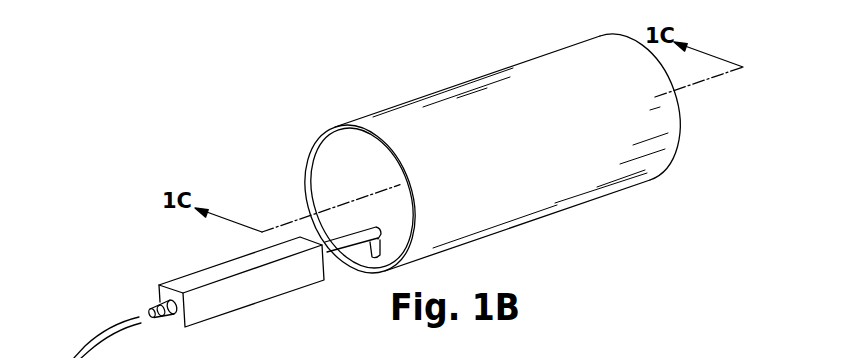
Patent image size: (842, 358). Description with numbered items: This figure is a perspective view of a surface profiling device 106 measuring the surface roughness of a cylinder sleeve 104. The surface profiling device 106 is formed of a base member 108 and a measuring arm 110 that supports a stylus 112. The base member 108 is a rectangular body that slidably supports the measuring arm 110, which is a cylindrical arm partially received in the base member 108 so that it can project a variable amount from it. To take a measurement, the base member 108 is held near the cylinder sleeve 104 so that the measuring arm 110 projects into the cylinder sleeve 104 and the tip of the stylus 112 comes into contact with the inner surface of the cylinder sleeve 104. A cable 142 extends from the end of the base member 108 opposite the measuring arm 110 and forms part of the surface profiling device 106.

The cylinder sleeve 104 is at (346, 92).
The surface profiling device 106 is at (108, 205).
The base member 108 is at (197, 280).
The measuring arm 110 is at (349, 237).
The stylus 112 is at (355, 254).
The cable 142 is at (80, 343).